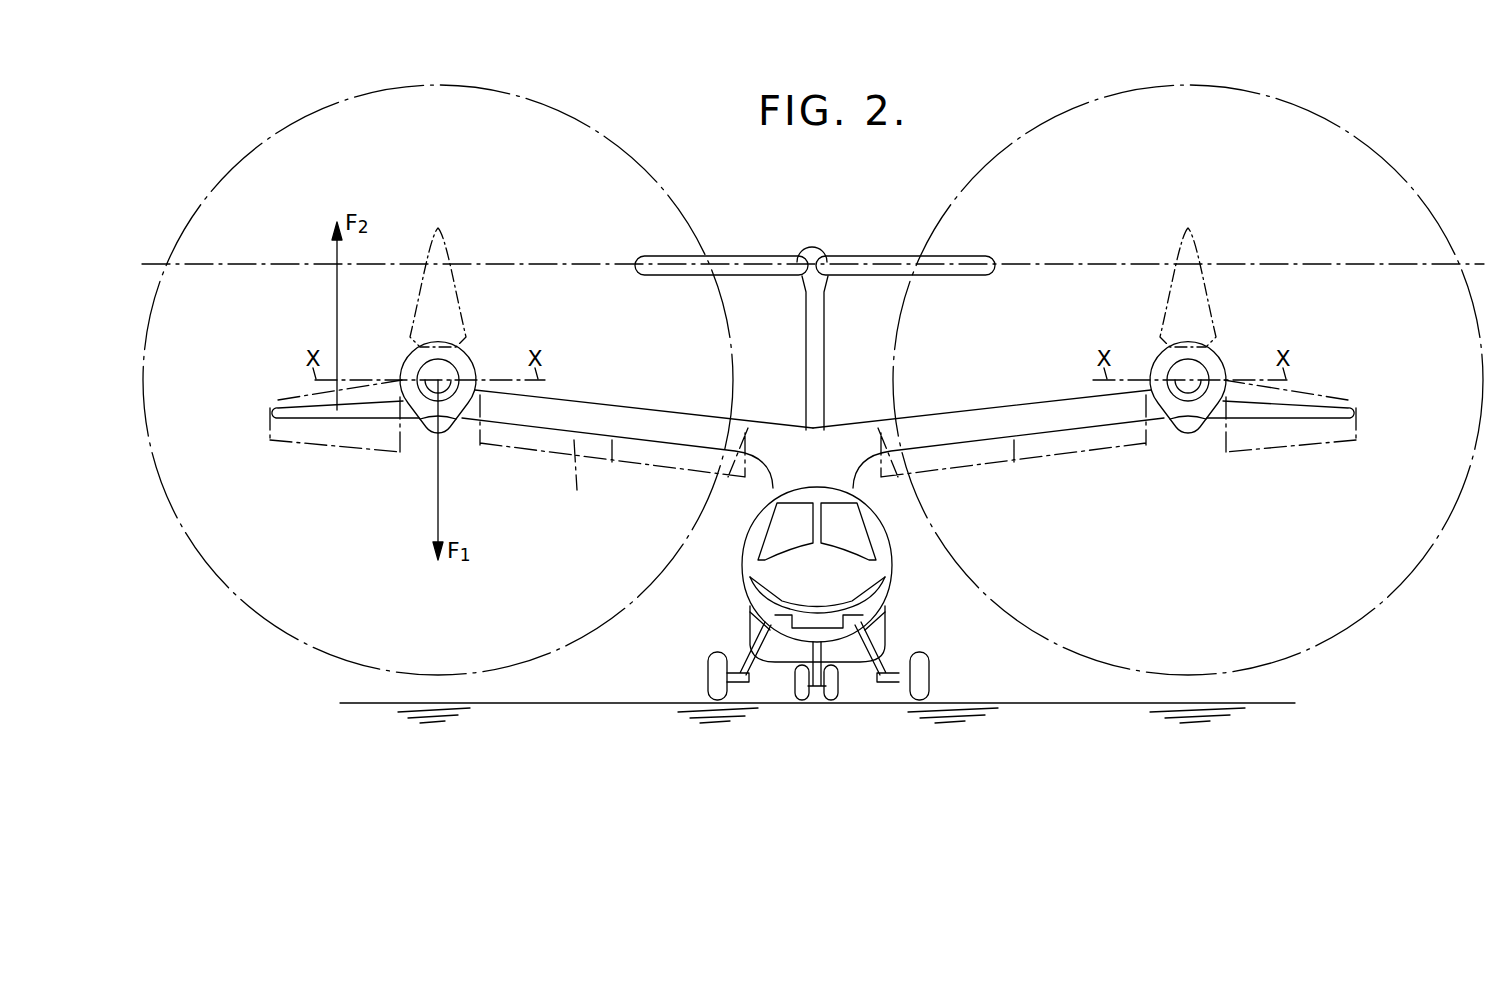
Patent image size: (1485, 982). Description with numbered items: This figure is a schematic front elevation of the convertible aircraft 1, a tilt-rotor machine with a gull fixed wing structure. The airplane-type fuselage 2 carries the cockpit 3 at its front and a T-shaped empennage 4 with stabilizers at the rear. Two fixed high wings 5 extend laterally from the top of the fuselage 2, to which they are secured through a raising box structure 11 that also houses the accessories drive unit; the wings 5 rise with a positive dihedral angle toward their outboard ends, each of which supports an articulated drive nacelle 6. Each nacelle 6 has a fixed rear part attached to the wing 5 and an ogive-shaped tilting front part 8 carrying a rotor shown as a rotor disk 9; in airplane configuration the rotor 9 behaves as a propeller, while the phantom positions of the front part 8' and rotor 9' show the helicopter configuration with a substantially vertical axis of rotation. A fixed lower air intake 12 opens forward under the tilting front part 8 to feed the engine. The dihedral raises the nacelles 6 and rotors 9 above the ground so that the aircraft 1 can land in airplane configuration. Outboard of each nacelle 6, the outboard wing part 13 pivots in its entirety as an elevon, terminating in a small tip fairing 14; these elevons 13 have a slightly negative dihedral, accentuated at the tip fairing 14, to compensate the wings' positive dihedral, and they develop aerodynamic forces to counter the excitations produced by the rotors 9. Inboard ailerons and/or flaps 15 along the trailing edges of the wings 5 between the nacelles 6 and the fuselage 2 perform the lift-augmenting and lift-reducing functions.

The convertible aircraft 1 is at (893, 600).
The fuselage 2 is at (889, 553).
The cockpit 3 is at (777, 534).
The T-shaped empennage 4 is at (871, 272).
The fixed high wing 5 is at (672, 425).
The articulated drive nacelle 6 is at (458, 428).
The tilting front part of nacelle 8 is at (823, 359).
The nacelle front part in helicopter configuration 8' is at (845, 287).
The rotor 9 is at (813, 380).
The rotor in helicopter configuration 9' is at (813, 233).
The raising box structure 11 is at (847, 470).
The lower air intake 12 is at (430, 436).
The outboard wing part 13 is at (358, 414).
The tip fairing 14 is at (268, 414).
The inboard aileron and/or flap 15 is at (622, 455).